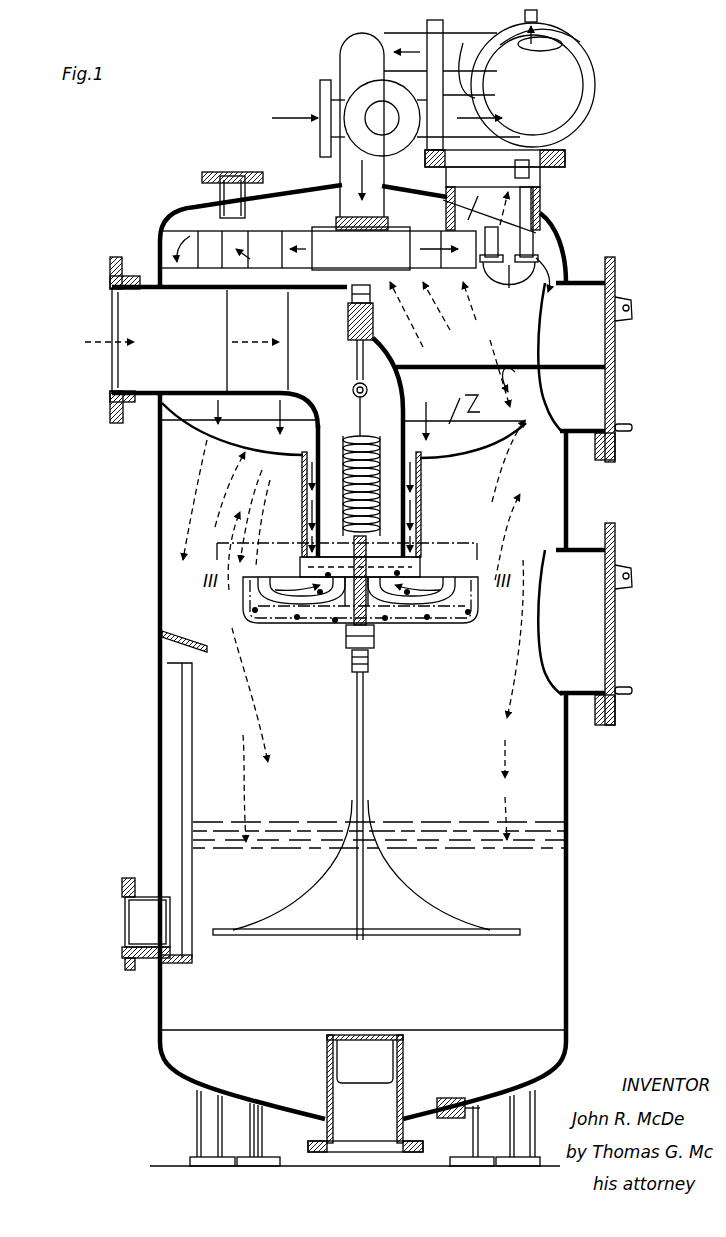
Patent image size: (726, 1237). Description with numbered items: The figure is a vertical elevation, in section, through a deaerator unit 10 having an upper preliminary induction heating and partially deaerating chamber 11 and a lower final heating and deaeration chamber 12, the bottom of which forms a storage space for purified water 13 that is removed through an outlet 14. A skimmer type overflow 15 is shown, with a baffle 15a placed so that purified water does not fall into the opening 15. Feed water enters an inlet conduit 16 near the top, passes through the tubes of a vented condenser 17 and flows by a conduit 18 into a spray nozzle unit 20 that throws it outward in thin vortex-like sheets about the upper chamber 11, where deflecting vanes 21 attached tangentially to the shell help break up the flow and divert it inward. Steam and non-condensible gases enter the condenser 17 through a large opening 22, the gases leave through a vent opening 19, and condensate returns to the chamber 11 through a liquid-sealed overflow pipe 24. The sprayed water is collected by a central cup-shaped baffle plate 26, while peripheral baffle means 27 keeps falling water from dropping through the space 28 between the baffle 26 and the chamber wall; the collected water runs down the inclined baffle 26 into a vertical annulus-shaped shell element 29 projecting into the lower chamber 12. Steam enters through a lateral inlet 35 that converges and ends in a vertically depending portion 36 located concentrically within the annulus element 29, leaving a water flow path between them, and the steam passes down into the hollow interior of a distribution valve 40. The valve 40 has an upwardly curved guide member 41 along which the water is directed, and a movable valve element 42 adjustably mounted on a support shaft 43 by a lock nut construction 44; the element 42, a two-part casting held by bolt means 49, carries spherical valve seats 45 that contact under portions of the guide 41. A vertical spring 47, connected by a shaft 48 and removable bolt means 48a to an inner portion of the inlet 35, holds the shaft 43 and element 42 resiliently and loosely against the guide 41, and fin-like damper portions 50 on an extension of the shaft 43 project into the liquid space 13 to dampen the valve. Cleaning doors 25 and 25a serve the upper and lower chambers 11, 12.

The unit 10 is at (158, 516).
The upper preliminary induction heating and partially deaerating chamber 11 is at (268, 212).
The lower final thoroughfare heating and deaeration chamber 12 is at (200, 613).
The purified water storage space 13 is at (530, 886).
The outlet 14 is at (358, 1140).
The skimmer type overflow 15 is at (175, 664).
The baffle 15a is at (165, 630).
The inlet conduit 16 is at (320, 86).
The vented condenser 17 is at (596, 74).
The conduit 18 is at (352, 170).
The vent opening 19 is at (538, 12).
The spray nozzle unit 20 is at (312, 236).
The deflecting vanes 21 is at (206, 276).
The large opening 22 is at (536, 214).
The liquid-sealed overflow pipe 24 is at (536, 196).
The cleaning door 25 is at (608, 352).
The cleaning door 25a is at (608, 624).
The cup-shaped baffle plate 26 is at (205, 428).
The baffle means 27 is at (578, 369).
The space 28 is at (556, 440).
The vertical annulus-shaped shell element 29 is at (304, 510).
The steam inlet 35 is at (114, 304).
The vertically-depending portion 36 is at (422, 488).
The distribution valve 40 is at (346, 602).
The guide member 41 is at (304, 578).
The movable valve element 42 is at (420, 625).
The support shaft 43 is at (376, 620).
The lock nut construction 44 is at (350, 640).
The valve seats 45 is at (456, 612).
The spring 47 is at (386, 454).
The shaft 48 is at (356, 362).
The removable bolt means 48a is at (350, 298).
The bolt means 49 is at (294, 625).
The fin-like damper portions 50 is at (414, 894).